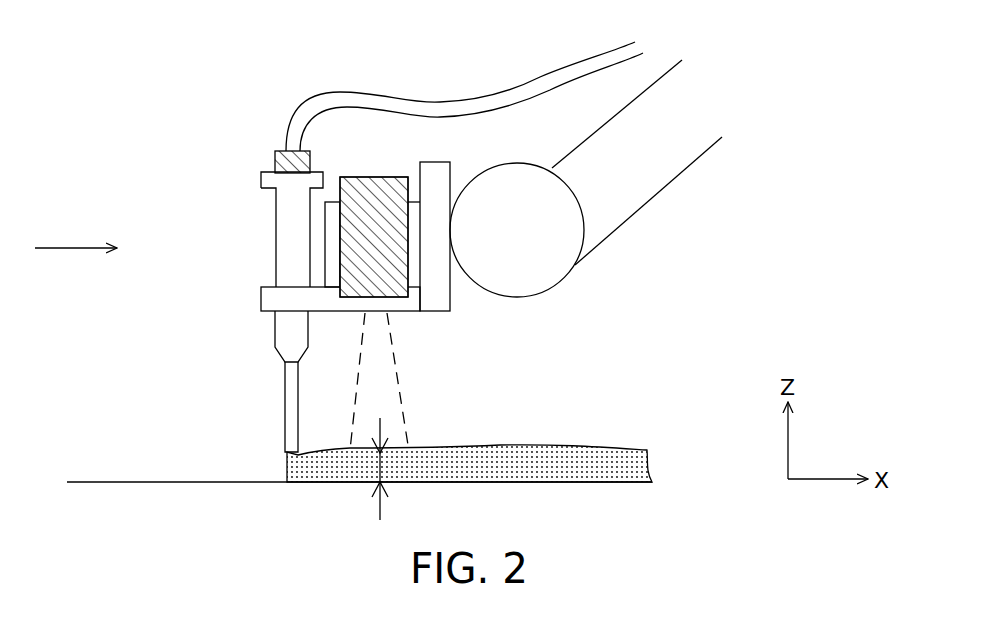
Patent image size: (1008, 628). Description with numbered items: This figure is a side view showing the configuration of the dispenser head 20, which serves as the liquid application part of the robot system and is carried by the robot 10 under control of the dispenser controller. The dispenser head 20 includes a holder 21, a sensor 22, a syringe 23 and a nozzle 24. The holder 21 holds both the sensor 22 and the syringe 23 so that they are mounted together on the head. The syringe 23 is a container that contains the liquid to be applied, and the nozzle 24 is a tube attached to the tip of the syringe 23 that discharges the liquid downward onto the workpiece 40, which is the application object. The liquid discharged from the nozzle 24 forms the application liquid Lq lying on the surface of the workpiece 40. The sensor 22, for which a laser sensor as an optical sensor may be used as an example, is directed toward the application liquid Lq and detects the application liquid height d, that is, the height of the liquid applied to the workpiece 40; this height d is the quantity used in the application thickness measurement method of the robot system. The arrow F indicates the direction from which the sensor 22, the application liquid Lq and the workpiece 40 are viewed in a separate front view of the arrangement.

The robot 10 is at (625, 175).
The dispenser head 20 is at (218, 124).
The holder 21 is at (410, 305).
The sensor 22 is at (377, 193).
The syringe 23 is at (293, 223).
The nozzle 24 is at (290, 403).
The workpiece 40 is at (167, 482).
The application liquid Lq is at (548, 457).
The application liquid height d is at (383, 470).
The arrow F is at (76, 229).